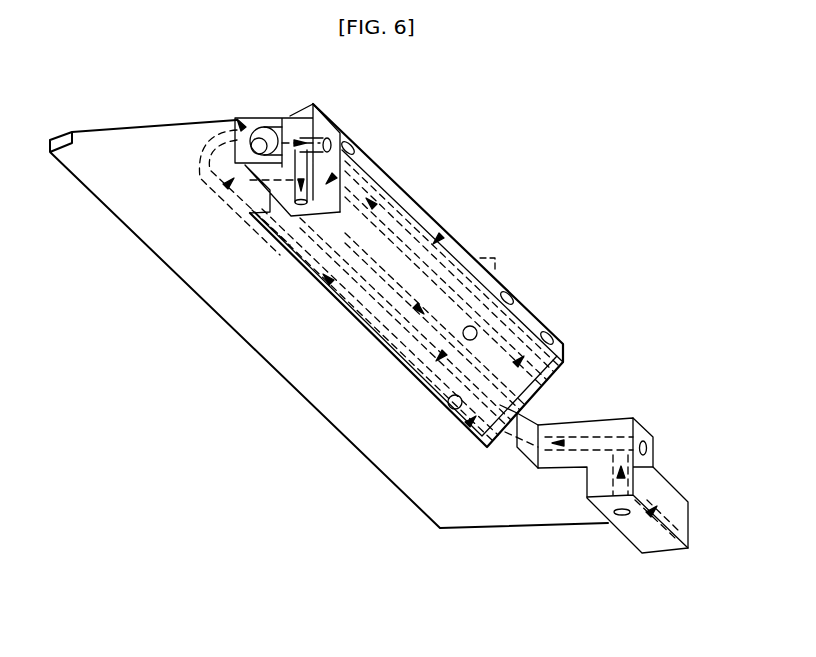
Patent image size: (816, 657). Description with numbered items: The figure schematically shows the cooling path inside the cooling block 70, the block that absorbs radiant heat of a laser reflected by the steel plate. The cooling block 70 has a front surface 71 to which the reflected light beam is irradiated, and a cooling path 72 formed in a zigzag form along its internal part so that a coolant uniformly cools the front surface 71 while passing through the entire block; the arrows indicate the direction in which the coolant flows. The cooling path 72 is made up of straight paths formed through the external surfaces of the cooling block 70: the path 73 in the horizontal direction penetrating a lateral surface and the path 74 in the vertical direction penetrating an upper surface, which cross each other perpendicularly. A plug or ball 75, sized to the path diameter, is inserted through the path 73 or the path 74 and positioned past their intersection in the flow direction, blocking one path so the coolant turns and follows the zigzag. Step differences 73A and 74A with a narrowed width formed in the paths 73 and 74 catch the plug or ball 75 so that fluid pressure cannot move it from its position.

The cooling block 70 is at (272, 348).
The front surface 71 is at (378, 190).
The cooling path 72 is at (442, 240).
The path in the horizontal direction 73 is at (535, 436).
The step difference 73A is at (460, 402).
The path in the vertical direction 74 is at (520, 322).
The step difference 74A is at (492, 252).
The plug or ball 75 is at (506, 290).